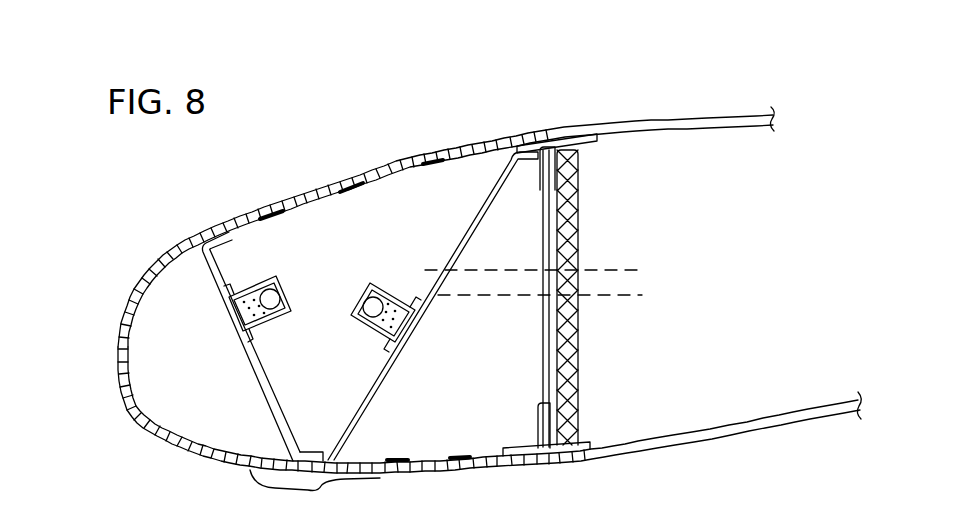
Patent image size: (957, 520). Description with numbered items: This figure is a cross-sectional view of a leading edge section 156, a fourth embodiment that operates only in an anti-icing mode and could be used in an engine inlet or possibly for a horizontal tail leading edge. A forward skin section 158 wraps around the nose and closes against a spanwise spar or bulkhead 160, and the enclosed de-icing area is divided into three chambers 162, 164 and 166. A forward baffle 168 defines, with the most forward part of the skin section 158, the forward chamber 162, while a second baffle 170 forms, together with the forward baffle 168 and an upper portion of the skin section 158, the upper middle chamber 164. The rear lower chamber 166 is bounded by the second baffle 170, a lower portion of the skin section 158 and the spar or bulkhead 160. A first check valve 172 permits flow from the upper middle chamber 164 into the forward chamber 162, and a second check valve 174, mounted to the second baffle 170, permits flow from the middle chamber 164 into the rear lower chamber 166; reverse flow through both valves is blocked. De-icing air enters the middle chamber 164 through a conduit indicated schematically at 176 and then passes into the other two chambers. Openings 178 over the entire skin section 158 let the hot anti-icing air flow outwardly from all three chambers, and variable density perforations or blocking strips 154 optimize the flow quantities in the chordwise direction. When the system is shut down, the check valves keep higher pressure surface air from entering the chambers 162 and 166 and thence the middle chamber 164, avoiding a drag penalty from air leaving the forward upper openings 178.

The blocking strips 154 is at (435, 157).
The leading edge section 156 is at (138, 248).
The forward skin section 158 is at (127, 307).
The spanwise spar or bulkhead 160 is at (567, 207).
The forward chamber 162 is at (150, 392).
The upper middle chamber 164 is at (312, 222).
The rear lower chamber 166 is at (493, 437).
The forward baffle 168 is at (220, 278).
The second baffle 170 is at (383, 377).
The first check valve 172 is at (230, 322).
The second check valve 174 is at (383, 297).
The conduit 176 is at (638, 283).
The openings 178 is at (315, 495).